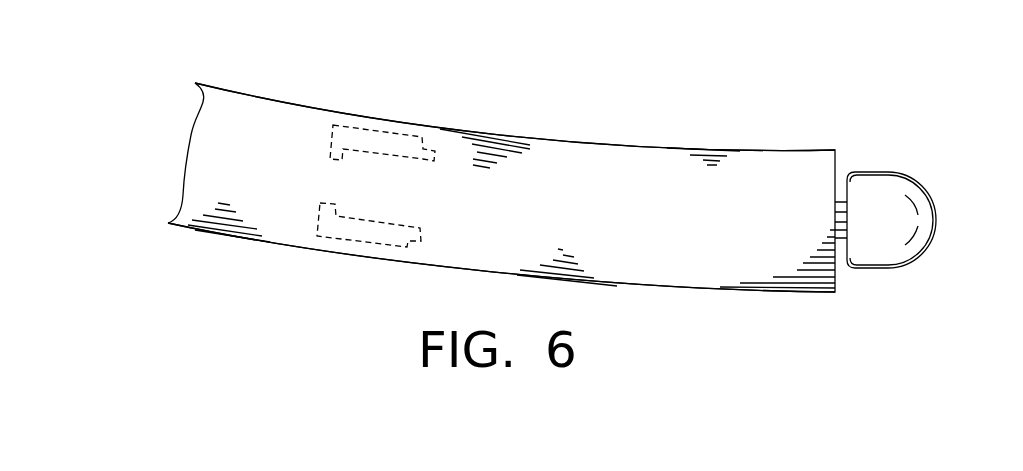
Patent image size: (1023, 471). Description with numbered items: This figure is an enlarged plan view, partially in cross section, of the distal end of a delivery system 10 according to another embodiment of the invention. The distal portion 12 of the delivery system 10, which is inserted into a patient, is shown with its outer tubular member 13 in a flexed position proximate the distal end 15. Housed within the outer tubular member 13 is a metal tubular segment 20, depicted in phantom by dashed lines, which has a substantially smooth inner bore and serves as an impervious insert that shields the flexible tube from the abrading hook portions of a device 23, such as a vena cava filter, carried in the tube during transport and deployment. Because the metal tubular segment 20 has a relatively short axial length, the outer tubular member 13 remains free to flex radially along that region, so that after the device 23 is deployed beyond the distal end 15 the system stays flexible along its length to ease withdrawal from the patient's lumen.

The delivery system 10 is at (740, 131).
The distal portion 12 is at (380, 277).
The outer tubular member 13 is at (555, 143).
The distal end 15 is at (845, 278).
The metal tubular segment 20 is at (389, 130).
The device 23 is at (910, 163).